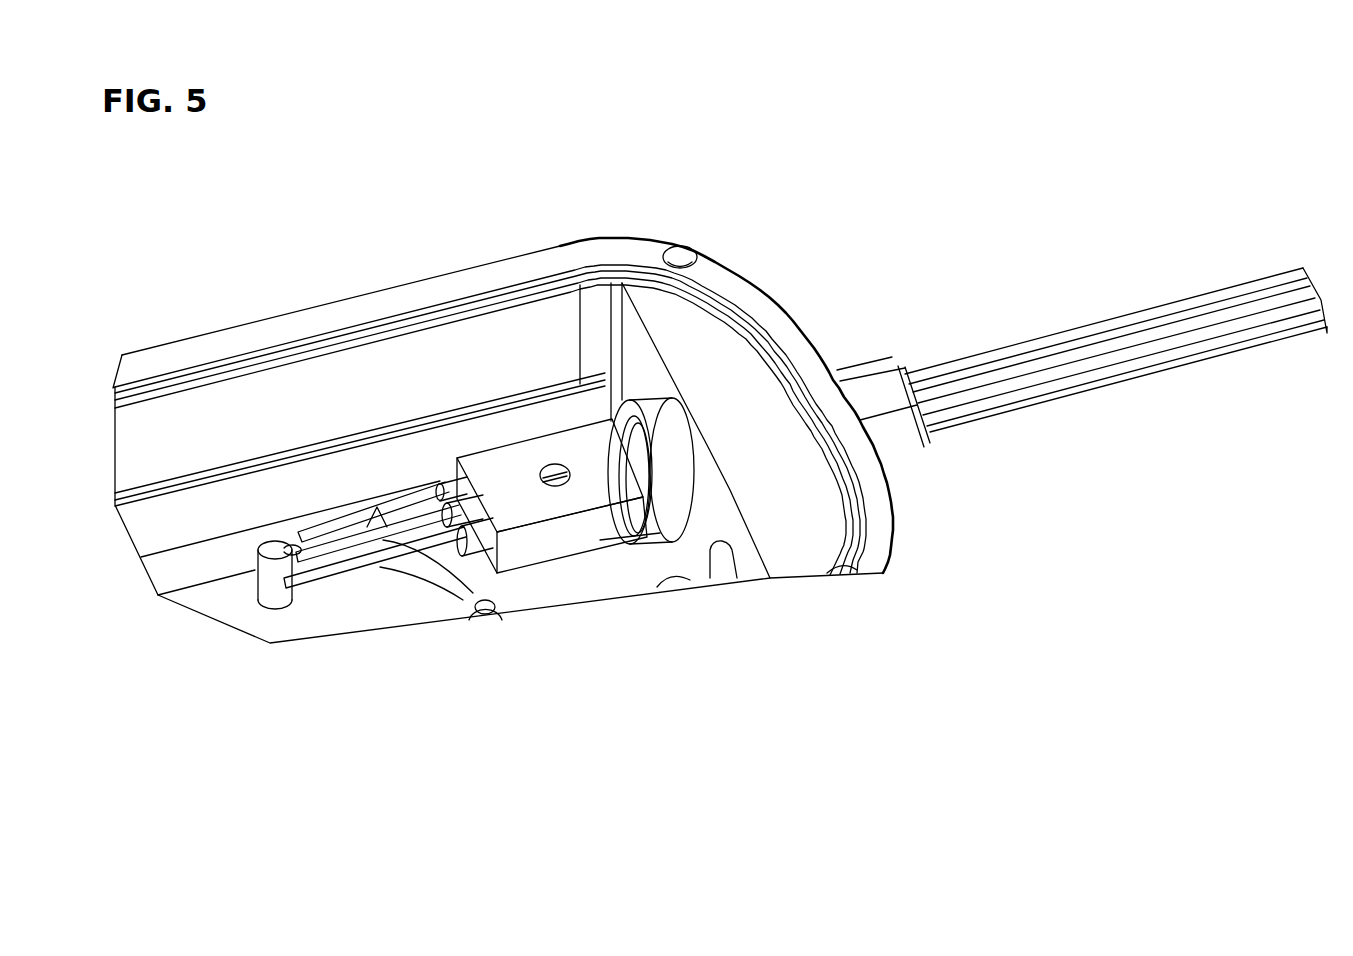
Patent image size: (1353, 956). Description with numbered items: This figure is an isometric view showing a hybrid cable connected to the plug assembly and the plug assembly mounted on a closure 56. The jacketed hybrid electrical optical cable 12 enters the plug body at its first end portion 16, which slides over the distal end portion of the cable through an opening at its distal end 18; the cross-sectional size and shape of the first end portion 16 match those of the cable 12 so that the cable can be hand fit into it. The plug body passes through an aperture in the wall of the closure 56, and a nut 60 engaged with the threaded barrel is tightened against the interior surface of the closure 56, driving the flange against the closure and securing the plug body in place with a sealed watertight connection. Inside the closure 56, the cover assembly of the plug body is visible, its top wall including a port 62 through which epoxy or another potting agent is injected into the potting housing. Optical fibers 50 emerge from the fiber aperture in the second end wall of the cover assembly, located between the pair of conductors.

The jacketed hybrid electrical optical cable 12 is at (1228, 288).
The first end portion 16 is at (865, 350).
The distal end 18 is at (931, 442).
The optical fibers 50 is at (292, 562).
The closure 56 is at (495, 256).
The nut 60 is at (672, 478).
The port 62 is at (547, 462).